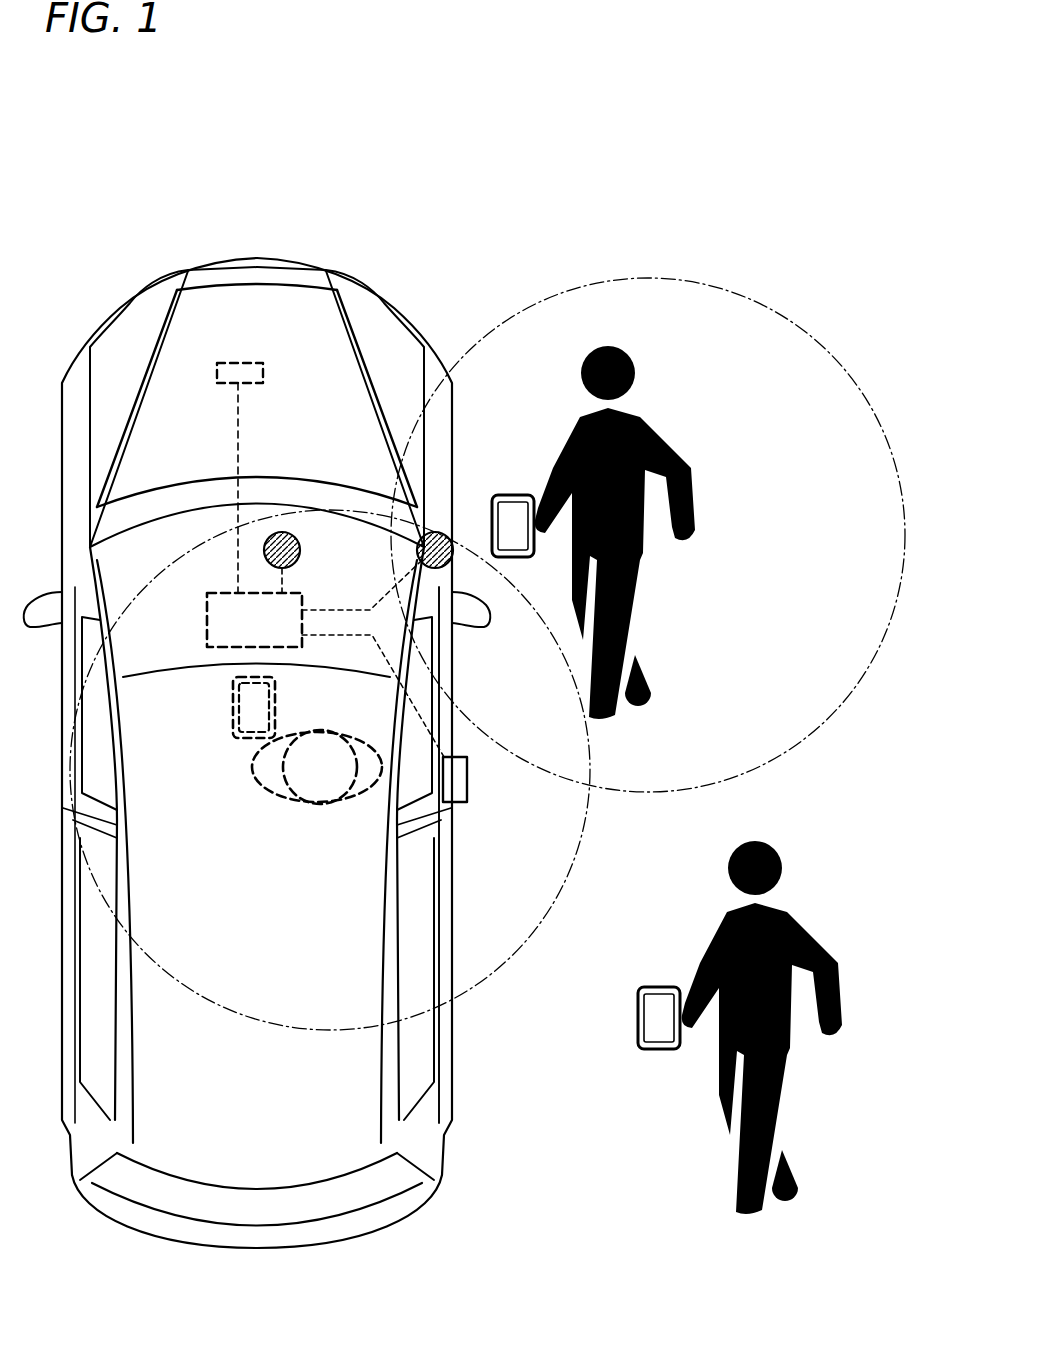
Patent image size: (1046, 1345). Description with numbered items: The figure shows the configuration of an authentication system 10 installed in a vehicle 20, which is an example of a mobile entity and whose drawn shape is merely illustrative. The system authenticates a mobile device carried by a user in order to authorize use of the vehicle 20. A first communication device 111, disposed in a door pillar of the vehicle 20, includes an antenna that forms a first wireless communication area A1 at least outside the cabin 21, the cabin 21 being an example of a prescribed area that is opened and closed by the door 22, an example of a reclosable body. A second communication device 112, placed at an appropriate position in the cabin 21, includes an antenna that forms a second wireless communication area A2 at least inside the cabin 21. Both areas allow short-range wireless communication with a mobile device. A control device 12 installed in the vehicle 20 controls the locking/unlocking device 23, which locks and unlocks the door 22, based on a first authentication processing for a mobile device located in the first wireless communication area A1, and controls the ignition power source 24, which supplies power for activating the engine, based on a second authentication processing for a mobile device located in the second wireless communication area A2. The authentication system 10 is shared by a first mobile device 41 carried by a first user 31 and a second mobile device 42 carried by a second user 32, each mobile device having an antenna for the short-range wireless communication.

The authentication system 10 is at (527, 236).
The vehicle 20 is at (400, 268).
The cabin 21 is at (221, 814).
The door 22 is at (445, 665).
The locking/unlocking device 23 is at (460, 782).
The ignition power source 24 is at (240, 363).
The control device 12 is at (215, 650).
The first communication device 111 is at (443, 533).
The second communication device 112 is at (287, 533).
The first user 31 is at (285, 803).
The second user 32 is at (780, 860).
The first mobile device 41 is at (237, 740).
The second mobile device 42 is at (656, 986).
The first wireless communication area A1 is at (717, 292).
The second wireless communication area A2 is at (514, 940).